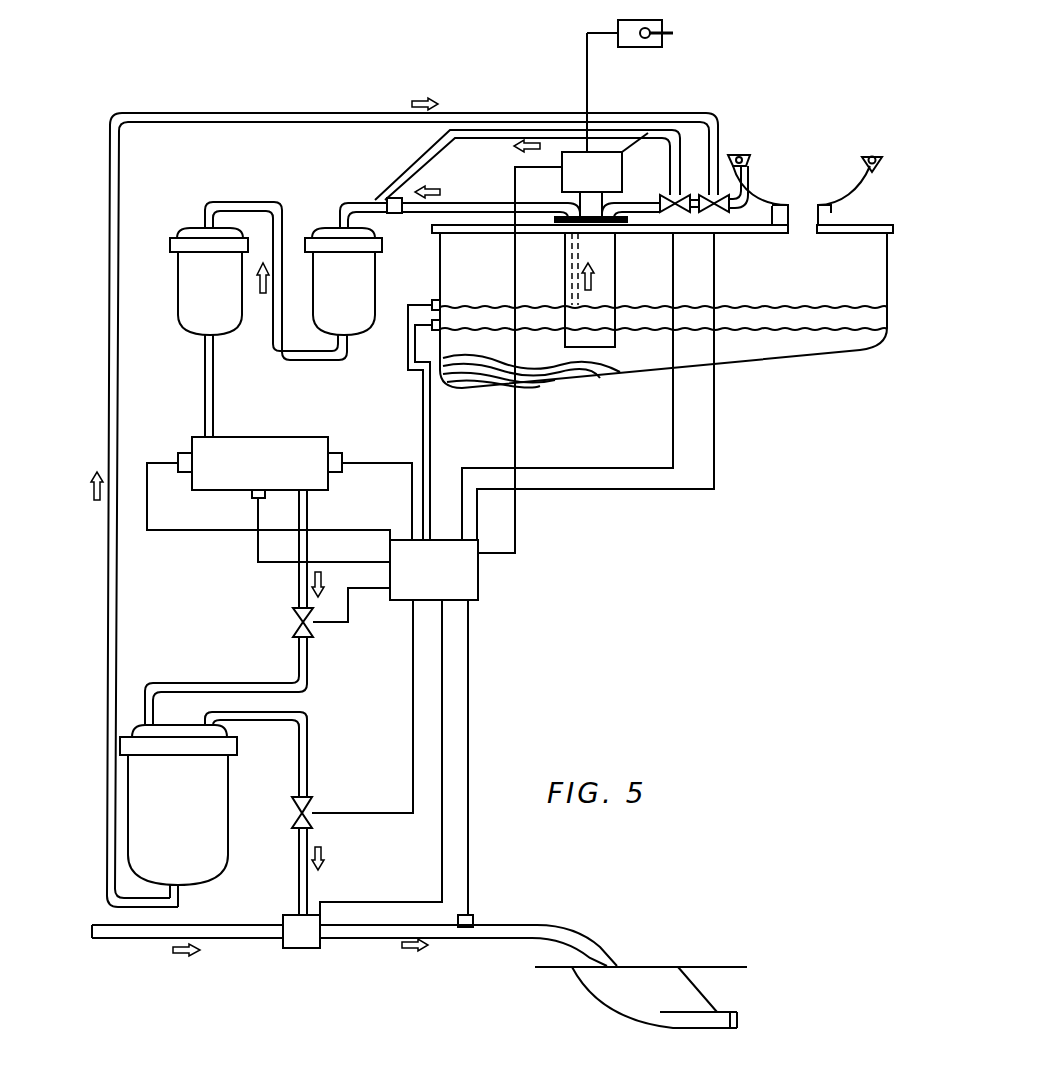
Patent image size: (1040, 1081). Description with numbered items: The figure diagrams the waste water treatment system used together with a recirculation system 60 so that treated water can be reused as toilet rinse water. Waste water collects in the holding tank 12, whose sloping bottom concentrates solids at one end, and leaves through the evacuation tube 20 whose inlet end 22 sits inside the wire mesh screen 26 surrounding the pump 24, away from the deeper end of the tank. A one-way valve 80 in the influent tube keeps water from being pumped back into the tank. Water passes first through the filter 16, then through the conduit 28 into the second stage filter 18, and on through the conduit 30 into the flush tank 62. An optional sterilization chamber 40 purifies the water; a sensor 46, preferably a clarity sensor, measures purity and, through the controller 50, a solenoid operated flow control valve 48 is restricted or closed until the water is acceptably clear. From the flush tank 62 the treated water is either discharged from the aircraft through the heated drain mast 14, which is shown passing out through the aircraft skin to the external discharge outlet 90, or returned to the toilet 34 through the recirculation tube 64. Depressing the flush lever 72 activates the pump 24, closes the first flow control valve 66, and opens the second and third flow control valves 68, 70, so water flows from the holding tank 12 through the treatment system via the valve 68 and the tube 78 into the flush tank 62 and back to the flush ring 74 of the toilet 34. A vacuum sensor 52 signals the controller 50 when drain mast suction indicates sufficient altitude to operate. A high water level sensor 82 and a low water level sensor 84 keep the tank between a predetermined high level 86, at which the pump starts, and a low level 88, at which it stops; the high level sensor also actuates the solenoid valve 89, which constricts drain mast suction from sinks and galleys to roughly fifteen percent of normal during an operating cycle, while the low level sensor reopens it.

The holding tank 12 is at (752, 362).
The drain mast 14 is at (497, 925).
The filter 16 is at (343, 320).
The second stage filter 18 is at (212, 312).
The evacuation tube 20 is at (453, 202).
The inlet end 22 is at (570, 296).
The pump 24 is at (633, 112).
The wire mesh screen 26 is at (619, 300).
The conduit 28 is at (237, 200).
The conduit 30 is at (200, 390).
The toilet 34 is at (832, 145).
The sterilization chamber 40 is at (268, 445).
The sensor 46 is at (250, 496).
The flow control valve 48 is at (293, 620).
The controller 50 is at (478, 602).
The vacuum sensor 52 is at (476, 915).
The recirculation system 60 is at (95, 665).
The flush tank 62 is at (207, 787).
The recirculation tube 64 is at (333, 123).
The first flow control valve 66 is at (292, 815).
The second flow control valve 68 is at (700, 113).
The third flow control valve 70 is at (720, 192).
The flush lever 72 is at (655, 45).
The flush ring 74 is at (745, 163).
The tube 78 is at (405, 165).
The one-way valve 80 is at (370, 200).
The high water level sensor 82 is at (448, 302).
The low water level sensor 84 is at (458, 322).
The high level 86 is at (742, 305).
The low level 88 is at (772, 326).
The solenoid valve 89 is at (290, 918).
The drain 90 is at (643, 965).